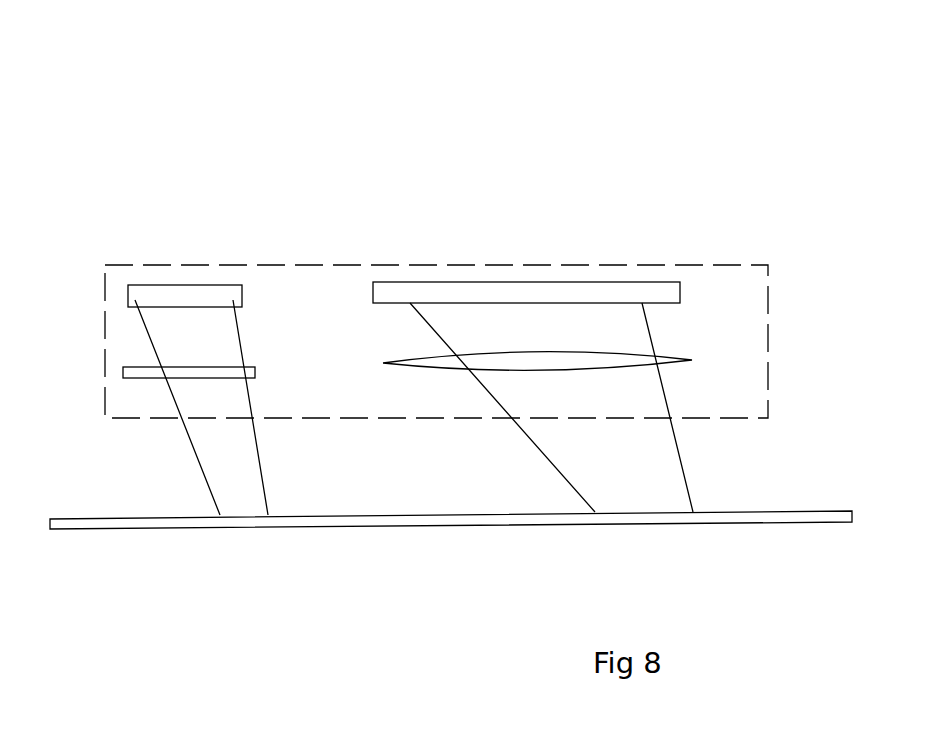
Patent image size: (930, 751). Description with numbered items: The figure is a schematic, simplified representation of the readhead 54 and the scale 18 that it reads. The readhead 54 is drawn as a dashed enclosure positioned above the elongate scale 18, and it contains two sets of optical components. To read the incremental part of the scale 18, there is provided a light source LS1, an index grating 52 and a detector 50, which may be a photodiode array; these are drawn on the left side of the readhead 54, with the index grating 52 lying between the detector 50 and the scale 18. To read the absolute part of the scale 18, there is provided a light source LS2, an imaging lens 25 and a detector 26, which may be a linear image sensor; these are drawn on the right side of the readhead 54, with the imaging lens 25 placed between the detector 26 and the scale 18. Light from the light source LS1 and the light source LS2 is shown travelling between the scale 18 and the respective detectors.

The readhead 54 is at (398, 265).
The detector 50 is at (216, 297).
The index grating 52 is at (137, 372).
The detector 26 is at (627, 293).
The imaging lens 25 is at (675, 360).
The scale 18 is at (87, 525).
The light source LS1 is at (268, 515).
The light source LS2 is at (692, 512).